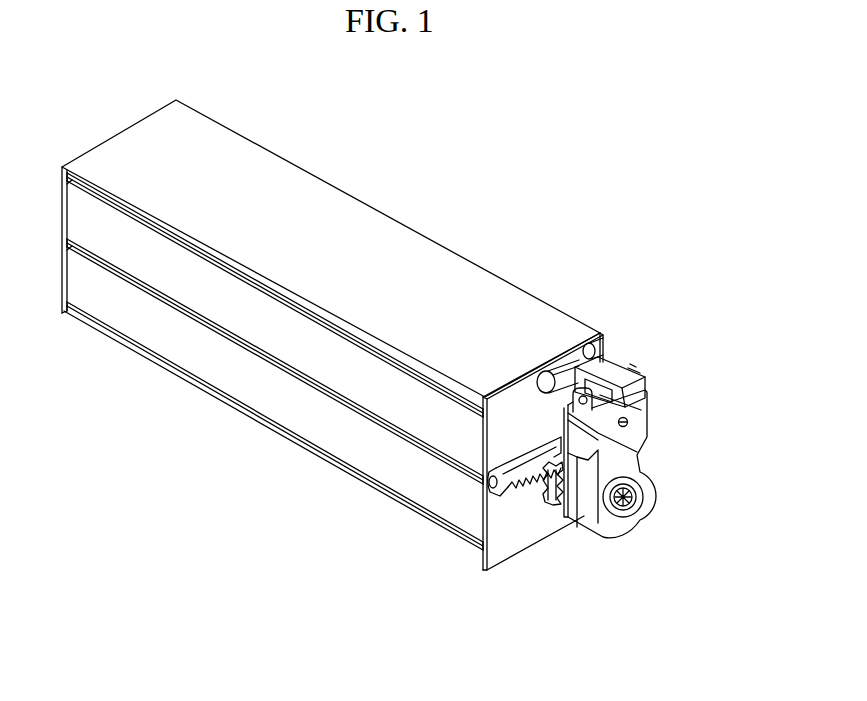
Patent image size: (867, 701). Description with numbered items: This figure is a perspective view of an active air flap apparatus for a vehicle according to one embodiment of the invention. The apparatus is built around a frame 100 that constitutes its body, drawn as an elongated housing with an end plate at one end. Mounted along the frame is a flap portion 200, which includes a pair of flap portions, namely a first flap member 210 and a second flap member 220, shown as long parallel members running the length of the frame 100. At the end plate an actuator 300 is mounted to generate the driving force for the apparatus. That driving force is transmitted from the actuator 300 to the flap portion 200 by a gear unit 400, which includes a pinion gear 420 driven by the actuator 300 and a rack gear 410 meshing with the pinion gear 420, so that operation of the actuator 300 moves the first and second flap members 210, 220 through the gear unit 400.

The frame 100 is at (423, 208).
The flap portion 200 is at (270, 358).
The first flap member 210 is at (173, 278).
The second flap member 220 is at (212, 355).
The actuator 300 is at (648, 448).
The gear unit 400 is at (542, 539).
The rack gear 410 is at (520, 485).
The pinion gear 420 is at (560, 510).